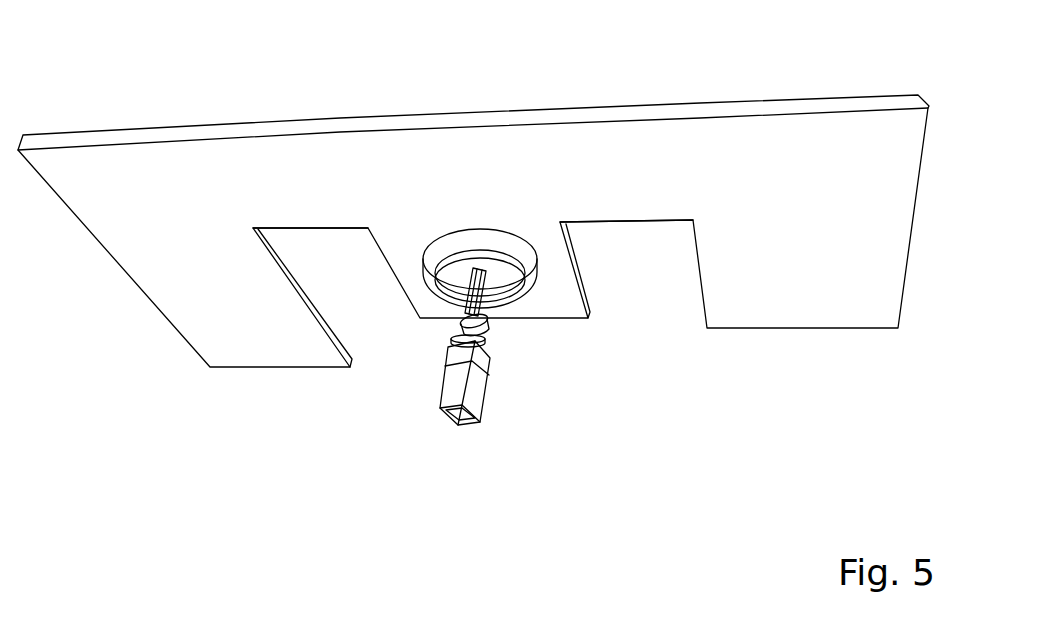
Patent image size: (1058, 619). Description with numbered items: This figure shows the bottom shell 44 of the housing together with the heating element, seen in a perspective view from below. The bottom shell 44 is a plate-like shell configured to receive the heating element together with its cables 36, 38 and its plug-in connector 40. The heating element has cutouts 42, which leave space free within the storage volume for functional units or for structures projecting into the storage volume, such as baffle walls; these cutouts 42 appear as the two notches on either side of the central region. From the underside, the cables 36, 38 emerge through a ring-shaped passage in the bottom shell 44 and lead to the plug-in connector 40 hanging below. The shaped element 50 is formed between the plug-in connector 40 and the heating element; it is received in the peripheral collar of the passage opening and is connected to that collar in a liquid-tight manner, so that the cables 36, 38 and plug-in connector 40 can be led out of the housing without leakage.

The bottom shell 44 is at (177, 163).
The cutouts 42 is at (347, 283).
The cable 38 is at (467, 280).
The cable 36 is at (487, 275).
The shaped element 50 is at (507, 282).
The plug-in connector 40 is at (478, 385).